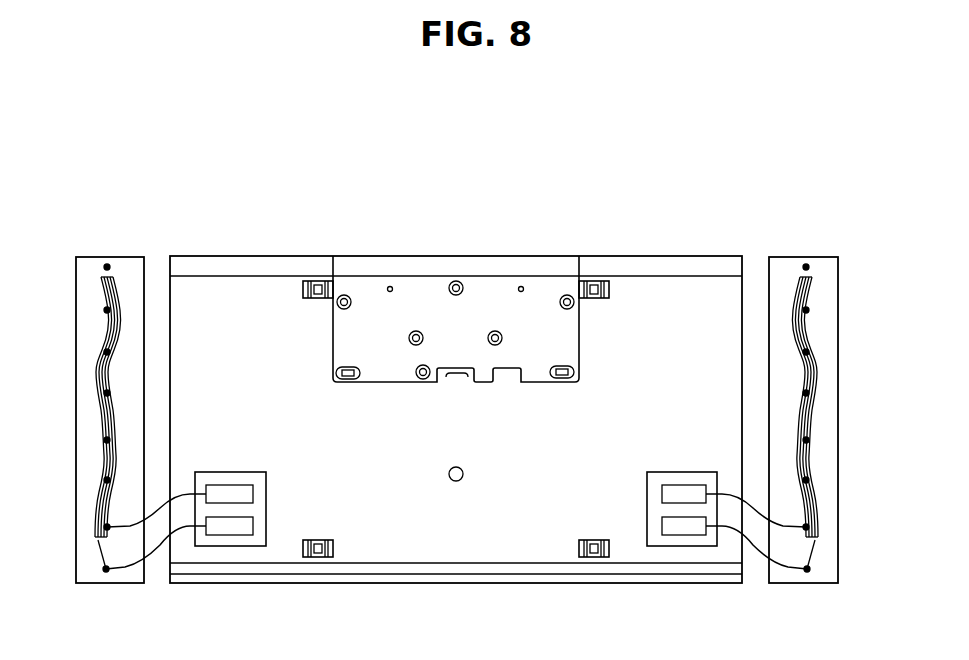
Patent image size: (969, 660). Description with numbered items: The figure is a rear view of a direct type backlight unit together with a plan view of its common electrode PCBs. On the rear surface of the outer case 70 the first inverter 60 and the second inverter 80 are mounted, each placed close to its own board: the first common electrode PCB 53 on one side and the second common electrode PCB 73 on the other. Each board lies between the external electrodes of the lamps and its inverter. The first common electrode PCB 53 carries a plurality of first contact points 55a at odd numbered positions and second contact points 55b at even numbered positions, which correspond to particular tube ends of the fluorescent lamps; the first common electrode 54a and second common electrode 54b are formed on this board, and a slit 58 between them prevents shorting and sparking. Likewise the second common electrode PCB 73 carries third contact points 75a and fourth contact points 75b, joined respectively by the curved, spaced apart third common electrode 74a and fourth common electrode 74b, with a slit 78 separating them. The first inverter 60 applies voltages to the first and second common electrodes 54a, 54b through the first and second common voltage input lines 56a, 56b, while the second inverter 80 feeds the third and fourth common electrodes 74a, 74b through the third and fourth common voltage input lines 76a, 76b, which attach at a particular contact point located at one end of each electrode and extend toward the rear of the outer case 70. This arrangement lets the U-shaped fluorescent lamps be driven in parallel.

The outer case 70 is at (264, 266).
The second common electrode PCB 73 is at (118, 256).
The third common electrode 74a is at (108, 293).
The fourth common electrode 74b is at (96, 352).
The third contact points 75a is at (107, 267).
The fourth contact points 75b is at (107, 310).
The slit 78 is at (107, 440).
The second inverter 80 is at (250, 476).
The third common voltage input line 76a is at (180, 496).
The fourth common voltage input line 76b is at (156, 556).
The first common electrode PCB 53 is at (797, 258).
The first common electrode 54a is at (805, 293).
The second common electrode 54b is at (817, 352).
The first contact points 55a is at (806, 267).
The second contact points 55b is at (806, 310).
The slit 58 is at (806, 440).
The first inverter 60 is at (663, 476).
The first common voltage input line 56a is at (733, 496).
The second common voltage input line 56b is at (754, 556).